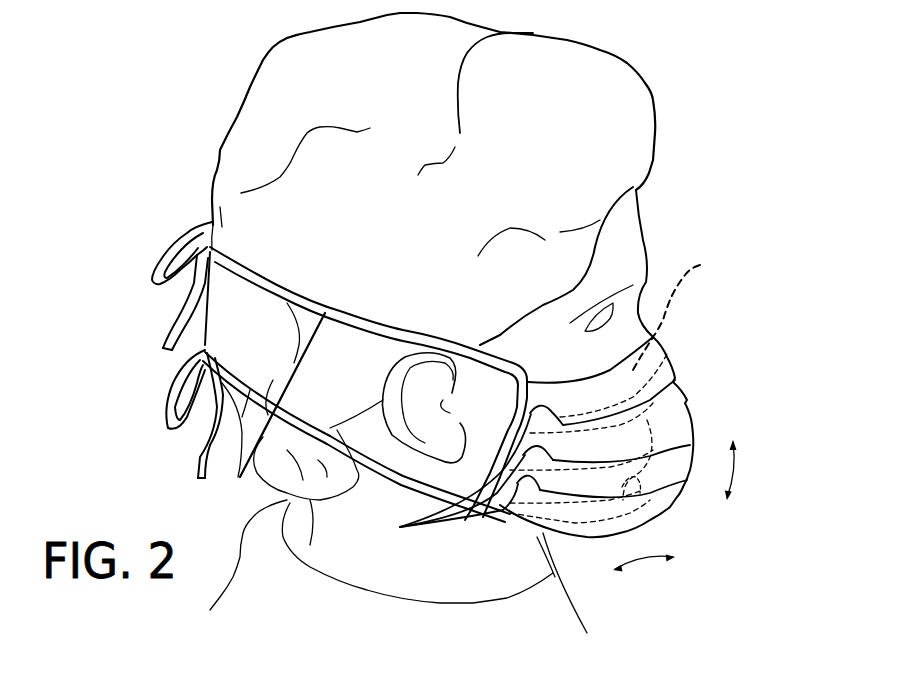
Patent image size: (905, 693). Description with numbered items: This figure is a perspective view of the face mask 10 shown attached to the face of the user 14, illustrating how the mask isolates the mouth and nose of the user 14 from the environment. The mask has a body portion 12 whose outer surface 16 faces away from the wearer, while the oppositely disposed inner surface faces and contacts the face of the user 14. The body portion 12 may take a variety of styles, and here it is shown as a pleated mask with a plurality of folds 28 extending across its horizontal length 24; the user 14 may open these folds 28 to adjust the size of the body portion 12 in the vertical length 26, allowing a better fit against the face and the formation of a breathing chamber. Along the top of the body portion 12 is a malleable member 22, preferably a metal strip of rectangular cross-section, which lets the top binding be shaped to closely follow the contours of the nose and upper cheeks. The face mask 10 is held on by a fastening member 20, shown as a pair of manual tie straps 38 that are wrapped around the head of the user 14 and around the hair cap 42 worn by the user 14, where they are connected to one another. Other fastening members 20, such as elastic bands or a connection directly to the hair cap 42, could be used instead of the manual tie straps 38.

The face mask 10 is at (658, 428).
The body portion 12 is at (660, 508).
The user 14 is at (630, 237).
The outer surface 16 is at (693, 417).
The fastening member 20 is at (143, 233).
The malleable member 22 is at (700, 265).
The horizontal length 24 is at (640, 567).
The vertical length 26 is at (732, 477).
The folds 28 is at (448, 482).
The manual tie straps 38 is at (257, 406).
The hair cap 42 is at (247, 128).